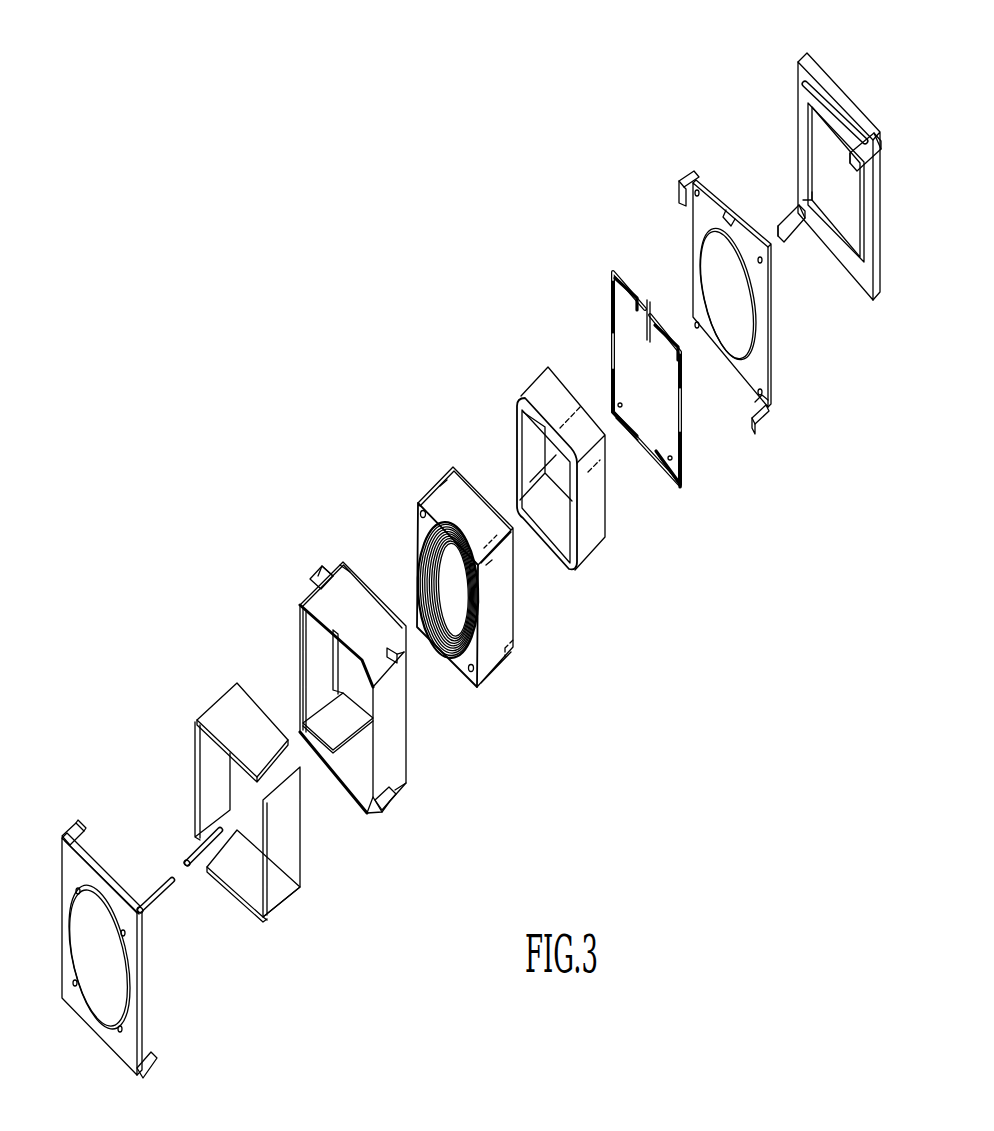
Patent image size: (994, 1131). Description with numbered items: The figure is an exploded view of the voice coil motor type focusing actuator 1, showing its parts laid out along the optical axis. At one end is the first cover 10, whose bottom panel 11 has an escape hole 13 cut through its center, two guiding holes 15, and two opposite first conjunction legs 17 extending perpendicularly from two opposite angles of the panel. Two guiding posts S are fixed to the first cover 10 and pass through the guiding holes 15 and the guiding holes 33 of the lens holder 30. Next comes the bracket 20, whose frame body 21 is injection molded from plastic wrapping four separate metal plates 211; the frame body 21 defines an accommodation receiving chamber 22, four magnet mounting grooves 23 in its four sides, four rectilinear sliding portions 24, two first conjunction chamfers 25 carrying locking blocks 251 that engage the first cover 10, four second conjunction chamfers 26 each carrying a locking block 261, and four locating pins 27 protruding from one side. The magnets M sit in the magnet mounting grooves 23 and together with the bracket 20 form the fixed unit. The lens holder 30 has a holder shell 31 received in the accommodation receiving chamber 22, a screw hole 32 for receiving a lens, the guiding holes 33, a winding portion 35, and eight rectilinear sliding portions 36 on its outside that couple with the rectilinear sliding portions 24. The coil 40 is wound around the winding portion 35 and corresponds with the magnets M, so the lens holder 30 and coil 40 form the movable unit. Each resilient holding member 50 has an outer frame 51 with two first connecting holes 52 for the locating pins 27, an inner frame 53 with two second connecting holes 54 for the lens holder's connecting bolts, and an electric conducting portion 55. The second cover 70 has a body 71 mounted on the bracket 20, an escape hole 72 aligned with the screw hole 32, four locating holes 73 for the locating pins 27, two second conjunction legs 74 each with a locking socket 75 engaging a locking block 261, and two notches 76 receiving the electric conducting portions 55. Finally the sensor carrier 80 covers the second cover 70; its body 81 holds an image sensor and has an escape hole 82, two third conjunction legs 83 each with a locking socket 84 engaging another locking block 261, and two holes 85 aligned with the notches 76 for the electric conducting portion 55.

The camera module assembly 1 is at (337, 254).
The first cover 10 is at (112, 788).
The bottom panel 11 is at (113, 882).
The escape hole 13 is at (82, 906).
The guiding holes 15 is at (124, 936).
The first conjunction legs 17 is at (70, 828).
The guiding posts S is at (193, 868).
The magnets M is at (199, 712).
The bracket 20 is at (296, 540).
The frame body 21 is at (317, 562).
The metal plates 211 is at (346, 568).
The accommodation receiving chamber 22 is at (345, 670).
The magnet mounting grooves 23 is at (308, 640).
The rectilinear sliding portions 24 is at (318, 722).
The first conjunction chamfers 25 is at (373, 806).
The locking blocks 251 is at (308, 578).
The second conjunction chamfers 26 is at (404, 648).
The locking blocks 261 is at (340, 556).
The locating pins 27 is at (442, 655).
The lens holder 30 is at (451, 440).
The holder shell 31 is at (468, 466).
The screw hole 32 is at (428, 562).
The guiding holes 33 is at (420, 500).
The winding portion 35 is at (508, 655).
The rectilinear sliding portions 36 is at (424, 505).
The coil 40 is at (523, 356).
The resilient holding members 50 is at (596, 234).
The outer frame 51 is at (612, 322).
The first connecting holes 52 is at (679, 495).
The inner frame 53 is at (630, 440).
The second connecting holes 54 is at (670, 472).
The electric conducting portion 55 is at (641, 292).
The second cover 70 is at (696, 130).
The body 71 is at (770, 348).
The escape hole 72 is at (756, 312).
The locating holes 73 is at (770, 394).
The second conjunction legs 74 is at (725, 212).
The locking socket 75 is at (681, 189).
The notches 76 is at (736, 212).
The sensor carrier 80 is at (781, 58).
The body 81 is at (880, 165).
The escape hole 82 is at (858, 210).
The third conjunction legs 83 is at (870, 140).
The locking socket 84 is at (792, 205).
The holes 85 is at (835, 100).